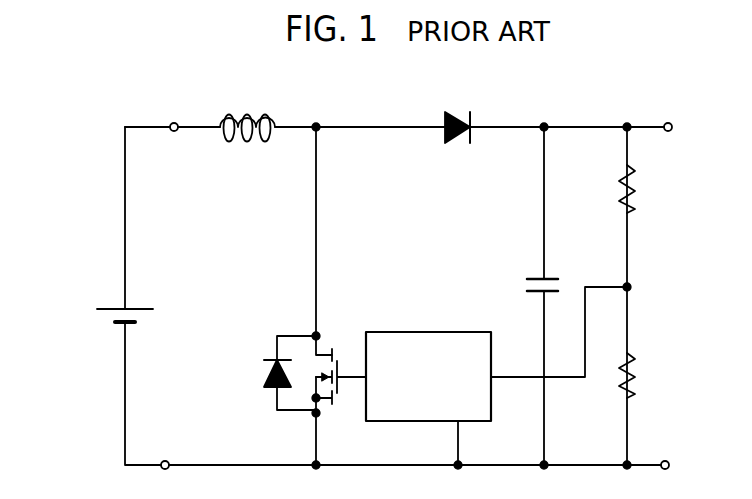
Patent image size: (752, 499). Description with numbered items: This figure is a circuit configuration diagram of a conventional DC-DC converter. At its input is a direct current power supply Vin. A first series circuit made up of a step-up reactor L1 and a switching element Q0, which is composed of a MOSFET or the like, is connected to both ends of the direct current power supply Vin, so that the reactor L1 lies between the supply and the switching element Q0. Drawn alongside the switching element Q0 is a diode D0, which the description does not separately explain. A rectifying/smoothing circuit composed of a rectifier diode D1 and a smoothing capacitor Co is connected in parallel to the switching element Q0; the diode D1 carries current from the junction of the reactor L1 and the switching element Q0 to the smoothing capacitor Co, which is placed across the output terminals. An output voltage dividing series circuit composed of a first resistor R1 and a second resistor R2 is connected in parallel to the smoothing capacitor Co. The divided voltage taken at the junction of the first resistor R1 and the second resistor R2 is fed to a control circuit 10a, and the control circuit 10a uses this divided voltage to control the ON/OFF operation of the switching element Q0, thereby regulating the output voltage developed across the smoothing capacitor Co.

The direct current power supply Vin is at (100, 312).
The step-up reactor L1 is at (247, 111).
The rectifier (diode) D1 is at (459, 111).
The smoothing capacitor Co is at (557, 265).
The first resistor R1 is at (646, 189).
The second resistor R2 is at (646, 375).
The switching element Q0 is at (334, 395).
The diode D0 is at (272, 373).
The control circuit 10a is at (393, 332).